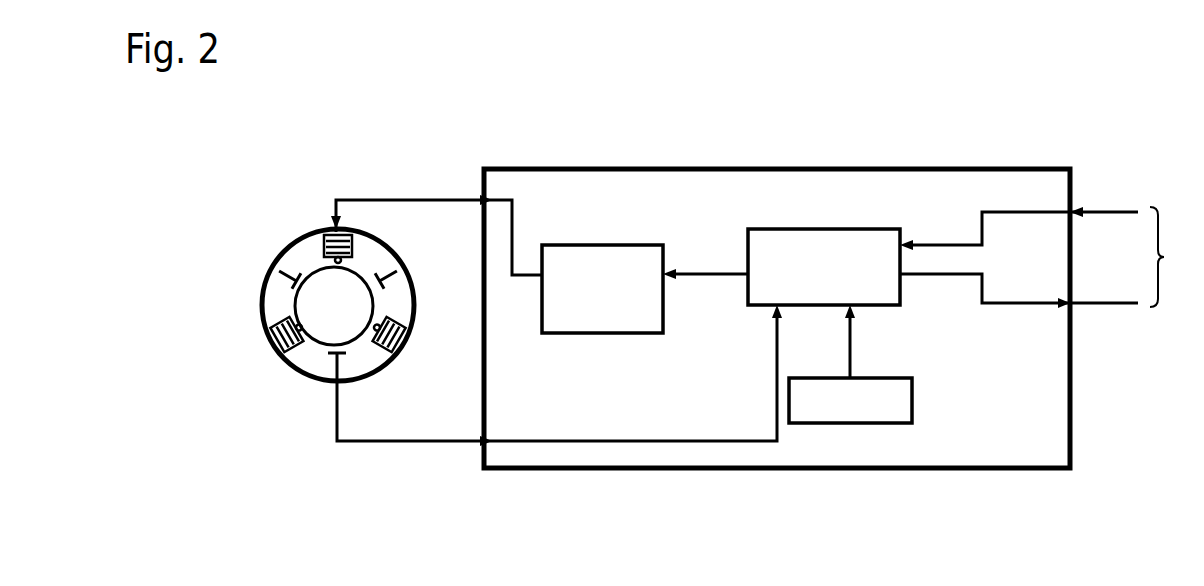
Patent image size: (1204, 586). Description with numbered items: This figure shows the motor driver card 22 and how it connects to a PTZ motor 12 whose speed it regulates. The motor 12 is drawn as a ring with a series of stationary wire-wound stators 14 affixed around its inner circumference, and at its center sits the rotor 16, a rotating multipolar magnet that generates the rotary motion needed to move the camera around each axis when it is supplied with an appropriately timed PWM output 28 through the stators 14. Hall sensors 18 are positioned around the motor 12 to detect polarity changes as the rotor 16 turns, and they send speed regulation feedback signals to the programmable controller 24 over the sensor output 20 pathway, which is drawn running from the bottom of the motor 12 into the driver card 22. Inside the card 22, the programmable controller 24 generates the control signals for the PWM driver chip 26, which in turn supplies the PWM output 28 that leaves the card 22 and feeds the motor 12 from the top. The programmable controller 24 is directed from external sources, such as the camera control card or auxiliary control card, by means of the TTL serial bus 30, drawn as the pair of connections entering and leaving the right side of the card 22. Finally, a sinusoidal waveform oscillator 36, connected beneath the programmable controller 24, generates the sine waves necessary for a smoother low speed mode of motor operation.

The PTZ motor 12 is at (238, 299).
The stators 14 is at (258, 346).
The rotor 16 is at (312, 342).
The Hall sensors 18 is at (291, 276).
The sensor output 20 is at (318, 437).
The motor driver card 22 is at (692, 158).
The programmable controller 24 is at (808, 216).
The PWM driver chip 26 is at (595, 228).
The PWM output 28 is at (406, 184).
The TTL serial bus 30 is at (1051, 257).
The sinusoidal waveform oscillator 36 is at (838, 443).